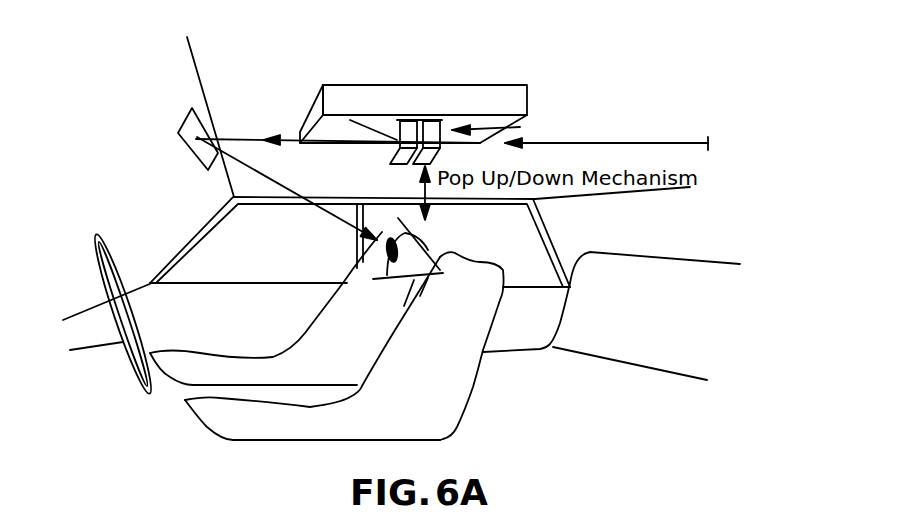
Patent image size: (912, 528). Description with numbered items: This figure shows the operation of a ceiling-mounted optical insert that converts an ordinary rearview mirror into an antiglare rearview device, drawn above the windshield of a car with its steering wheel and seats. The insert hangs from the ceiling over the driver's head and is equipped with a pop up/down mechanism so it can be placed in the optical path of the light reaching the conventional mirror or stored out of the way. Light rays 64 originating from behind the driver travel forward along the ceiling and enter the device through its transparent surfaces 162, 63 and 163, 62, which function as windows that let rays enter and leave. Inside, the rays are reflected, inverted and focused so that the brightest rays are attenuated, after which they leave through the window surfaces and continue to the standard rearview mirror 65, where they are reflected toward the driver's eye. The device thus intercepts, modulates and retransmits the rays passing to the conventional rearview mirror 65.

The transparent surface 62 is at (345, 132).
The transparent surface 63 is at (395, 140).
The transparent surface 163 is at (440, 132).
The transparent surface 162 is at (520, 127).
The light rays 64 is at (707, 143).
The standard rearview mirror 65 is at (182, 140).